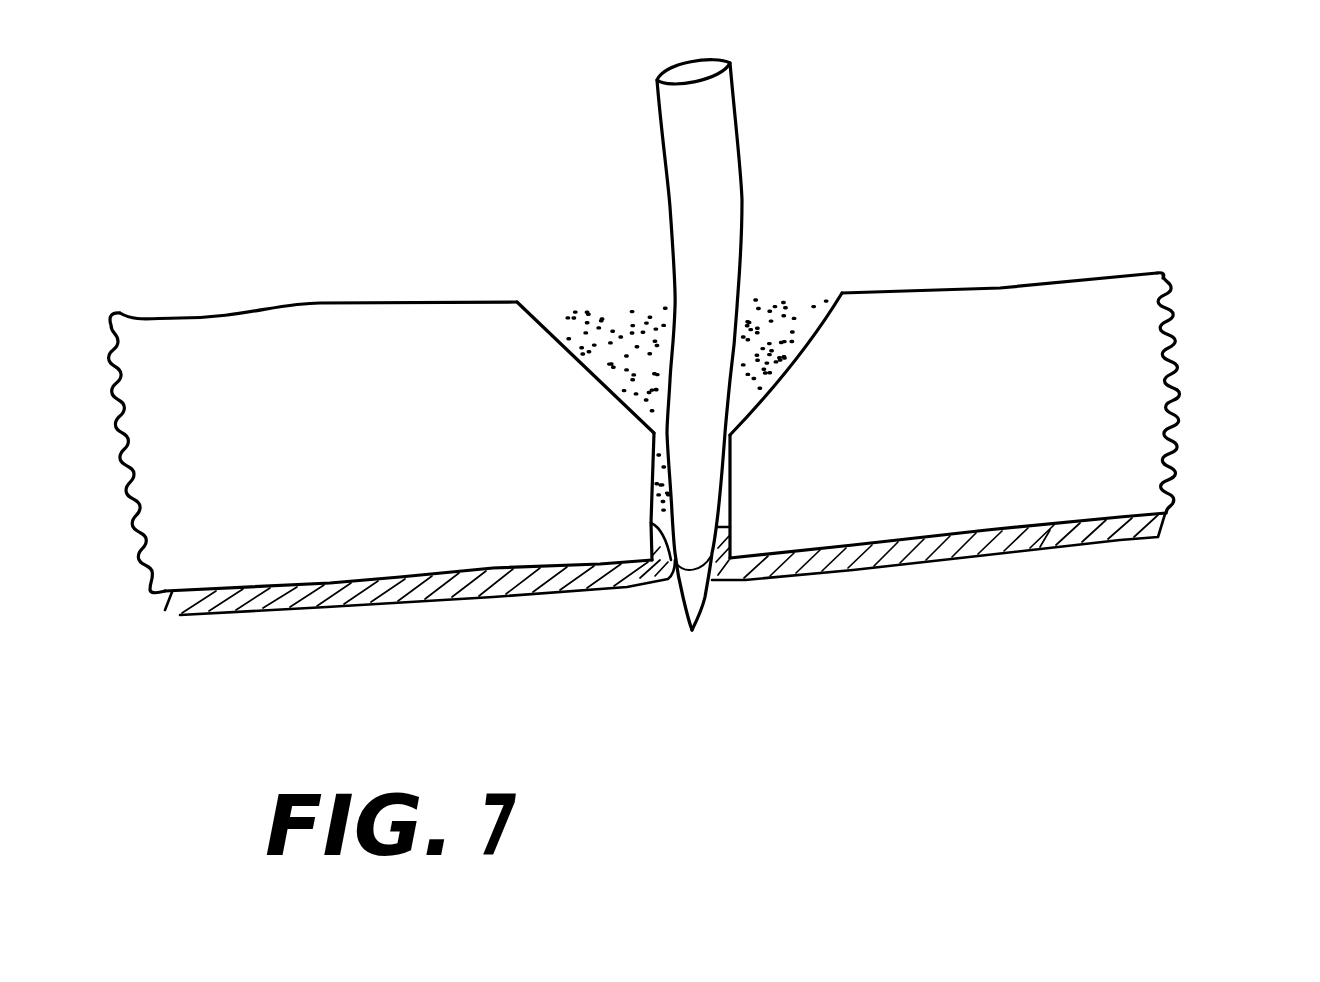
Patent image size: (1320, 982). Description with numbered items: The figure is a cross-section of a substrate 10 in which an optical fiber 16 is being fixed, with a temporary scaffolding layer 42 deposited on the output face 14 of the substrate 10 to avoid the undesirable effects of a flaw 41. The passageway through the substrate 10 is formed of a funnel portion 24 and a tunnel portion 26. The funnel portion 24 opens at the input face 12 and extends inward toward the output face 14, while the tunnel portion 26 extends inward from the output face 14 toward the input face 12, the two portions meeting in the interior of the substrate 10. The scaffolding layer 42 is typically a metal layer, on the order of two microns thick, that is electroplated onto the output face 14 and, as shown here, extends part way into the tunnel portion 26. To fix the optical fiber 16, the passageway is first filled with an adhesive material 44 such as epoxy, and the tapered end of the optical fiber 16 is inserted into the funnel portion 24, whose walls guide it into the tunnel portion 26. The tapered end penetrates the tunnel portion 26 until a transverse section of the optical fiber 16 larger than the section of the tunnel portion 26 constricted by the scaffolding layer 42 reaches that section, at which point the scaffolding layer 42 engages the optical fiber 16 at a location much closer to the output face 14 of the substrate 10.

The substrate 10 is at (1046, 407).
The input face 12 is at (1070, 281).
The output face 14 is at (1167, 515).
The optical fiber 16 is at (737, 97).
The funnel portion 24 is at (795, 368).
The tunnel portion 26 is at (731, 480).
The flaw 41 is at (694, 563).
The scaffolding layer 42 is at (1048, 545).
The adhesive material 44 is at (797, 296).